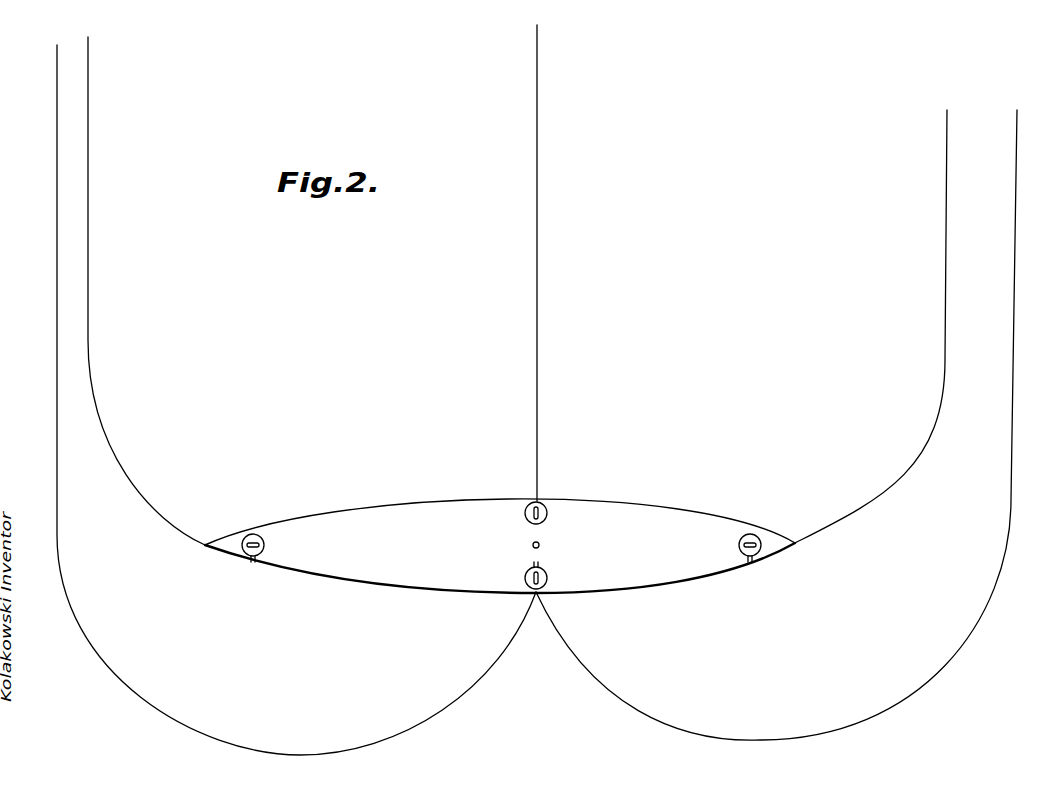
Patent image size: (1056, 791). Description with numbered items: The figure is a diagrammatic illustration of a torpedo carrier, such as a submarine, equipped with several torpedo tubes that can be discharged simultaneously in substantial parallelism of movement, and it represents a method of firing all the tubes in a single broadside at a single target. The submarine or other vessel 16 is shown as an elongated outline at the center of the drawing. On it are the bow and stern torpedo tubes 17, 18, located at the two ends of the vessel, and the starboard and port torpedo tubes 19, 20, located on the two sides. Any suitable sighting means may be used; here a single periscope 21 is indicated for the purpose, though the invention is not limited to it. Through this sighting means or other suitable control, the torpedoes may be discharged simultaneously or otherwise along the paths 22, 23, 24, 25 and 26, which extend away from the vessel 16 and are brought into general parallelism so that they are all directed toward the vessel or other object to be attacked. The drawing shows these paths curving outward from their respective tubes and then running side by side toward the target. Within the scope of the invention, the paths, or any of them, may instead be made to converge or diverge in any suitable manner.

The submarine or other vessel 16 is at (651, 516).
The bow torpedo tube 17 is at (775, 541).
The stern torpedo tube 18 is at (230, 540).
The starboard torpedo tube 19 is at (550, 589).
The port torpedo tube 20 is at (546, 497).
The periscope 21 is at (539, 545).
The torpedo path 22 is at (885, 326).
The torpedo path 23 is at (790, 425).
The torpedo path 24 is at (552, 263).
The torpedo path 25 is at (146, 291).
The torpedo path 26 is at (282, 400).